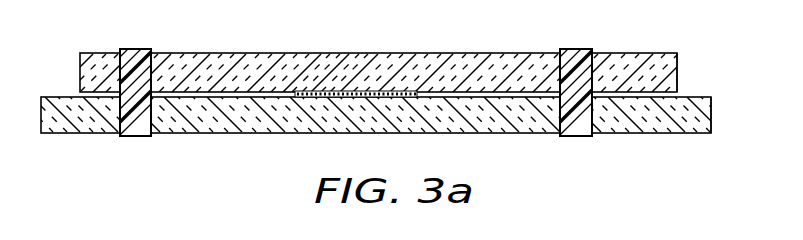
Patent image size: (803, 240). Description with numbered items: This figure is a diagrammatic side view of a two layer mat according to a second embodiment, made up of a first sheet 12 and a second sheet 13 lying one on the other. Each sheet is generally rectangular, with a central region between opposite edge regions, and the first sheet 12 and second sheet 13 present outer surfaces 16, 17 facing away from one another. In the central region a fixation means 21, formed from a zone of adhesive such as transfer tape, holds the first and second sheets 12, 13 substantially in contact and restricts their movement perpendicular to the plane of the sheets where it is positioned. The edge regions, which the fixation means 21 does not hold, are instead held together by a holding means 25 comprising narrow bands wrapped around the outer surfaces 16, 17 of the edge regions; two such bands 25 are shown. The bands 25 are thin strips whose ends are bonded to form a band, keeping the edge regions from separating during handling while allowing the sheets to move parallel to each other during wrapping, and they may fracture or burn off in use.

The first sheet 12 is at (270, 65).
The second sheet 13 is at (237, 122).
The outer surface of first sheet 16 is at (662, 54).
The outer surface of second sheet 17 is at (652, 134).
The fixation means 21 is at (397, 90).
The holding means (bands) 25 is at (135, 137).